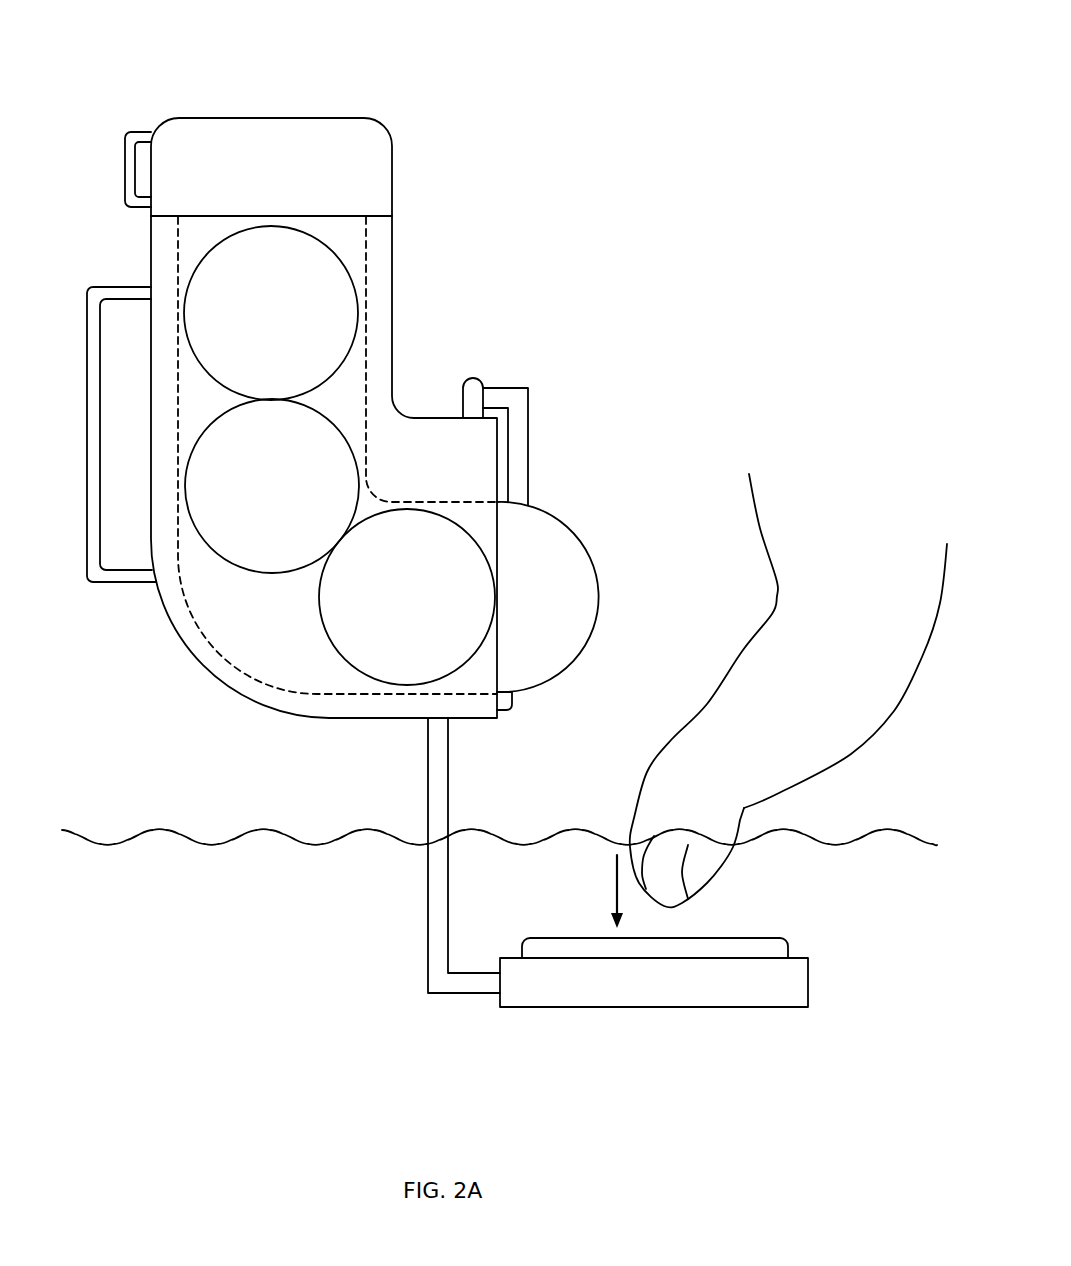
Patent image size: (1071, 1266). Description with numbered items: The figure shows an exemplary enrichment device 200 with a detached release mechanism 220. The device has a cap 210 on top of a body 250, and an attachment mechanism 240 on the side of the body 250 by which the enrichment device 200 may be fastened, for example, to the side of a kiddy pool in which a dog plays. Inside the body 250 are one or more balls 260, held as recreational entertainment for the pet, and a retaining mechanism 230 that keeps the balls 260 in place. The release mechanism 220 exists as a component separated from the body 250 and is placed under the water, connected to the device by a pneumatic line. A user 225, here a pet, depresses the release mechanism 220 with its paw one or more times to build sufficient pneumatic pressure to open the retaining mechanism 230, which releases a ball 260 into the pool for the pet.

The enrichment device 200 is at (70, 16).
The cap 210 is at (393, 178).
The body 250 is at (393, 287).
The attachment mechanism 240 is at (81, 274).
The balls 260 is at (260, 581).
The retaining mechanism 230 is at (593, 570).
The release mechanism 220 is at (637, 1015).
The user 225 is at (653, 697).